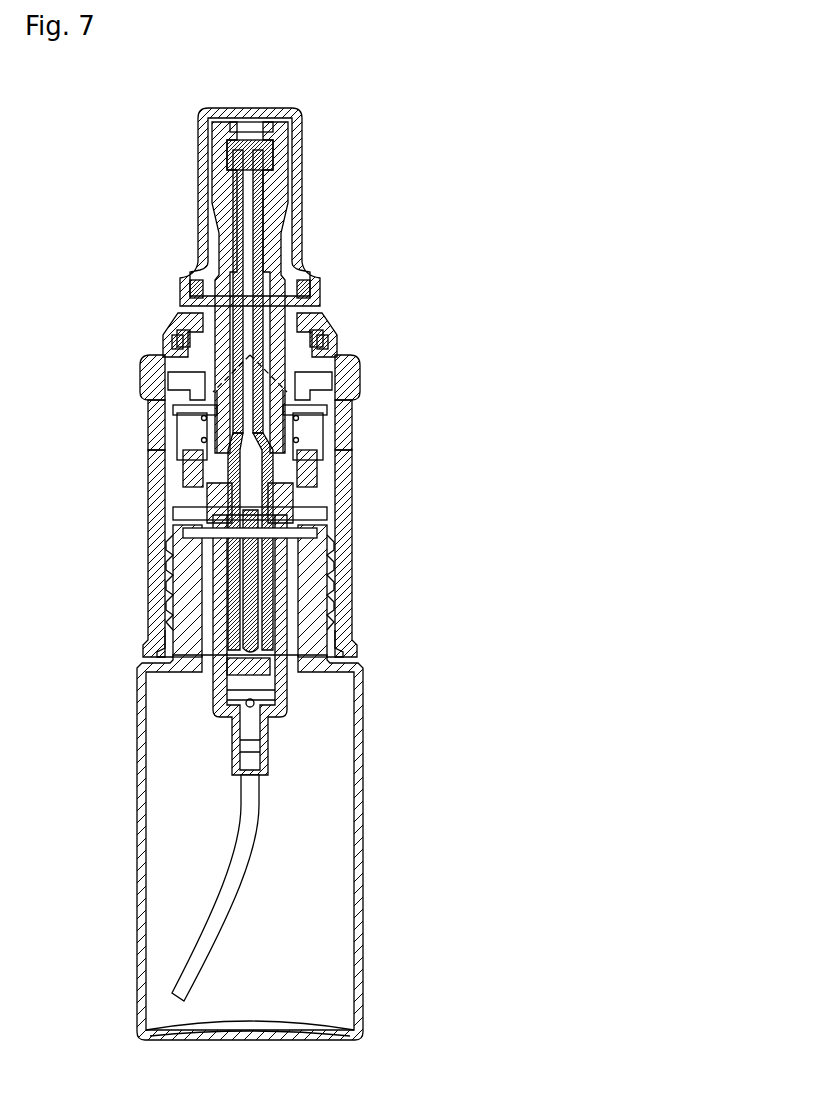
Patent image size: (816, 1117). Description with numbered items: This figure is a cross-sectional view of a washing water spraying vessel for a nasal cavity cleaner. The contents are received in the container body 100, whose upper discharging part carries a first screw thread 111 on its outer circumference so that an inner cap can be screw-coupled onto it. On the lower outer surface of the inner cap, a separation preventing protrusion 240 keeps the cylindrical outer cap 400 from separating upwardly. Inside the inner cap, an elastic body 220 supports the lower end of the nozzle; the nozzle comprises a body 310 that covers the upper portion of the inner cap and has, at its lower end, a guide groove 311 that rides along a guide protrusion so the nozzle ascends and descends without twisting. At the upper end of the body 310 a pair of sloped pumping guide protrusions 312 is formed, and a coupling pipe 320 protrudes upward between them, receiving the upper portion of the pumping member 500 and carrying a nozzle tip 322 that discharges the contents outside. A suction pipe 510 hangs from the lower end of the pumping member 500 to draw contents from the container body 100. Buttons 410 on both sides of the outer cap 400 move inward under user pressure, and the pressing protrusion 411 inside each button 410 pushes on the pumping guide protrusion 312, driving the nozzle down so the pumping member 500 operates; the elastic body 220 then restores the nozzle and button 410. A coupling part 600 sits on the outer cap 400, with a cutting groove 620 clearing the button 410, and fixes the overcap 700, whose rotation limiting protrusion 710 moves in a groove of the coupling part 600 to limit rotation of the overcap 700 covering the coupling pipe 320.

The container body 100 is at (360, 903).
The first screw thread 111 is at (318, 593).
The elastic body 220 is at (298, 477).
The separation preventing protrusion 240 is at (340, 630).
The body 310 is at (357, 388).
The guide groove 311 is at (308, 437).
The pumping guide protrusion 312 is at (322, 346).
The coupling pipe 320 is at (282, 275).
The nozzle tip 322 is at (263, 137).
The outer cap 400 is at (158, 572).
The button 410 is at (153, 427).
The pressing protrusion 411 is at (203, 385).
The pumping member 500 is at (215, 677).
The suction pipe 510 is at (237, 875).
The coupling part 600 is at (170, 318).
The cutting groove 620 is at (163, 353).
The overcap 700 is at (295, 128).
The rotation limiting protrusion 710 is at (190, 287).